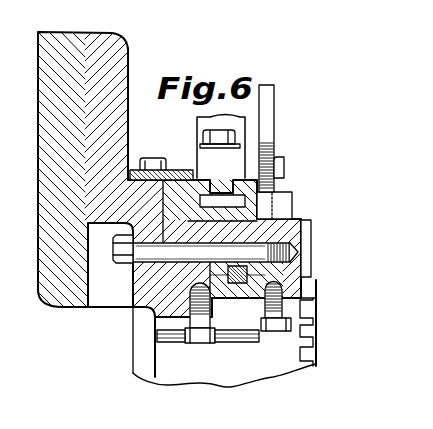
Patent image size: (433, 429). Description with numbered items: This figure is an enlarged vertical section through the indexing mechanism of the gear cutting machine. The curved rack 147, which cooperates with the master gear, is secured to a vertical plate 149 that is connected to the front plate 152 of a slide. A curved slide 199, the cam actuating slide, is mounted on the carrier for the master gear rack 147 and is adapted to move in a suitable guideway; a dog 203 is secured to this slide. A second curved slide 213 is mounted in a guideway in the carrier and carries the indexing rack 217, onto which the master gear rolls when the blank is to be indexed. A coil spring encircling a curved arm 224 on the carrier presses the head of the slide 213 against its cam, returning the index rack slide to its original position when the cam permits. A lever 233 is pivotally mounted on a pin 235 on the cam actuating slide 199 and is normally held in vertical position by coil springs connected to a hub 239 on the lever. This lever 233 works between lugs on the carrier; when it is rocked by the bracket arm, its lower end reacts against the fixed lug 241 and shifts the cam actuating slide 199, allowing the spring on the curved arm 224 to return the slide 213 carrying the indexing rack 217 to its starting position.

The front plate 152 is at (60, 33).
The vertical plate 149 is at (128, 68).
The dog 203 is at (197, 123).
The pin 235 is at (200, 160).
The lever 233 is at (274, 104).
The hub 239 is at (275, 149).
The curved slide 199 is at (284, 162).
The lug 241 is at (292, 192).
The curved rack 147 is at (306, 232).
The curved arm 224 is at (284, 271).
The indexing rack 217 is at (317, 313).
The curved slide 213 is at (228, 300).